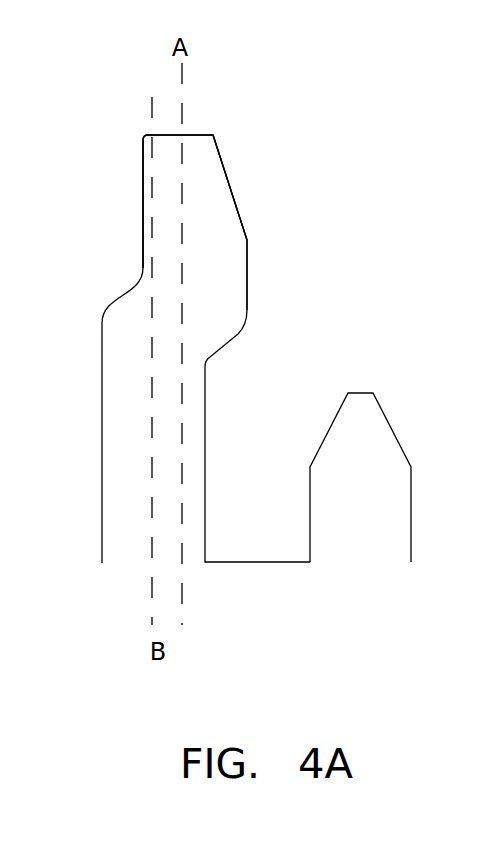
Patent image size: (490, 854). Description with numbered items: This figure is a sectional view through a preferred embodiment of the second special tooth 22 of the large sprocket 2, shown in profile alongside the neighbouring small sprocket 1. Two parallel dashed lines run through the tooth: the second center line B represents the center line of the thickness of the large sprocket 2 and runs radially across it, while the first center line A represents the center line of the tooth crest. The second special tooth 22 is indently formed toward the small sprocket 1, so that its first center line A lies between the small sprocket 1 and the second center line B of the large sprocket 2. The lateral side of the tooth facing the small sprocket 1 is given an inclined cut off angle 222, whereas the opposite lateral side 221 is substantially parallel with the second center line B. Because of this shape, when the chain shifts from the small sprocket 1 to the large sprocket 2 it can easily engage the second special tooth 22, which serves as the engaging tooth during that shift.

The small sprocket 1 is at (392, 507).
The large sprocket 2 is at (115, 377).
The second special tooth 22 is at (220, 228).
The opposite lateral side 221 is at (143, 213).
The inclined cut off angle 222 is at (225, 172).